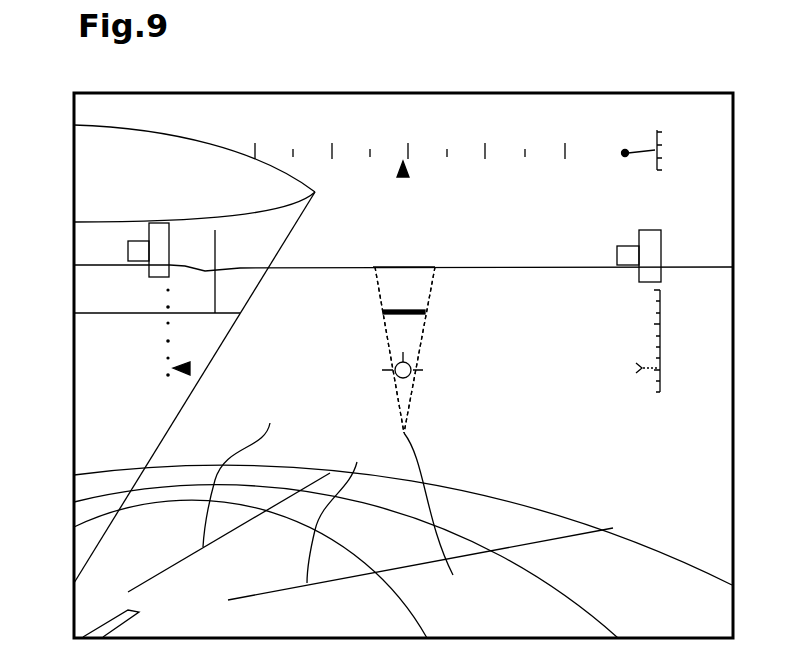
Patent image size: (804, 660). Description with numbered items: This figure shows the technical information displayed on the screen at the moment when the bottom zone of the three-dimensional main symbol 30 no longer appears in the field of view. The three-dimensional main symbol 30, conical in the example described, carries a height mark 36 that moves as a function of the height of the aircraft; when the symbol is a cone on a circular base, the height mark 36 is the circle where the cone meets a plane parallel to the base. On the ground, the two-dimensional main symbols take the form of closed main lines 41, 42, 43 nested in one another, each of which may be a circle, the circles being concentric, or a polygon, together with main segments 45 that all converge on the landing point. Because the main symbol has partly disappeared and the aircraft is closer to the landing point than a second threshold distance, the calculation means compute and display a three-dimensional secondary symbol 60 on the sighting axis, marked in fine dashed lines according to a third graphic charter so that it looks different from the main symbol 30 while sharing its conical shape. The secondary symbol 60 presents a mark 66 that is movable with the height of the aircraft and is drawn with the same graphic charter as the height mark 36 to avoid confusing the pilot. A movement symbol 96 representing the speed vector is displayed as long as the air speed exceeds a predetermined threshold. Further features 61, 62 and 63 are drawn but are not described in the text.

The three-dimensional main symbol 30 is at (132, 510).
The height mark 36 is at (215, 313).
The main line 41 is at (400, 587).
The main line 42 is at (578, 590).
The main line 43 is at (662, 547).
The main segments 45 is at (284, 489).
The three-dimensional secondary symbol 60 is at (468, 367).
The flight path line 61 is at (446, 513).
The dashed cone outline 62 is at (417, 267).
The landing symbol cone 63 is at (427, 398).
The mark 66 is at (397, 310).
The movement symbol 96 is at (405, 365).